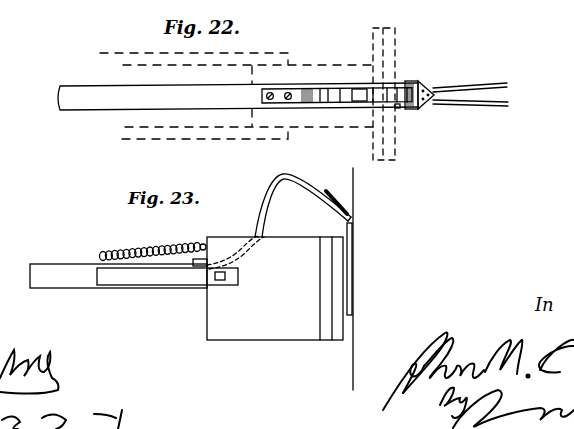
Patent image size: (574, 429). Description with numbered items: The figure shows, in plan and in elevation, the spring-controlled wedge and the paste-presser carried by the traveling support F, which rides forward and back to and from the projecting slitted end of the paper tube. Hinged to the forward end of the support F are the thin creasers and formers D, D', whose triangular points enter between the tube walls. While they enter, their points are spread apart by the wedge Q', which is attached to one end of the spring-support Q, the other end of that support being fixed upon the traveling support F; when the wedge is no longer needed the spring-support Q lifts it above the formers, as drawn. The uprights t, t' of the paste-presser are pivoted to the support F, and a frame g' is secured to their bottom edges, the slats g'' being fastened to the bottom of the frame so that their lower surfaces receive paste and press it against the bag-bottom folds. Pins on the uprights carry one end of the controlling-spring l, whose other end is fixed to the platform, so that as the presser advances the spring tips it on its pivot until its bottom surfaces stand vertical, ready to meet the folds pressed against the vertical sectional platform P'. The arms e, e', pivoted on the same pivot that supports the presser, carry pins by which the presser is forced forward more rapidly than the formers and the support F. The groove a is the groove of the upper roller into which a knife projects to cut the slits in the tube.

In FIG. 22, the traveling support F is at (60, 110).
In FIG. 23, the traveling support F is at (118, 276).
In FIG. 22, the arm e is at (247, 133).
In FIG. 23, the arm e is at (167, 273).
In FIG. 22, the arm e' is at (236, 87).
In FIG. 22, the upright t is at (337, 107).
In FIG. 23, the upright t is at (275, 288).
In FIG. 22, the upright t' is at (337, 84).
In FIG. 22, the groove a is at (359, 95).
In FIG. 22, the frame g' is at (370, 94).
In FIG. 23, the frame g' is at (306, 288).
In FIG. 22, the slats g'' is at (402, 94).
In FIG. 23, the slats g'' is at (317, 288).
In FIG. 23, the spring-support Q is at (279, 221).
In FIG. 22, the wedge Q' is at (421, 85).
In FIG. 23, the wedge Q' is at (336, 192).
In FIG. 23, the vertical sectional platform P' is at (367, 279).
In FIG. 22, the former D is at (470, 112).
In FIG. 23, the former D is at (361, 269).
In FIG. 22, the former D' is at (470, 77).
In FIG. 23, the controlling-spring l is at (176, 244).